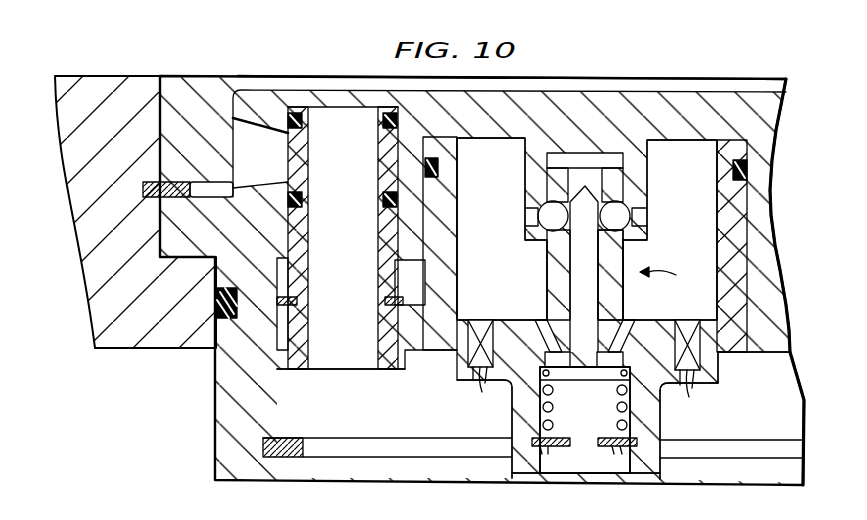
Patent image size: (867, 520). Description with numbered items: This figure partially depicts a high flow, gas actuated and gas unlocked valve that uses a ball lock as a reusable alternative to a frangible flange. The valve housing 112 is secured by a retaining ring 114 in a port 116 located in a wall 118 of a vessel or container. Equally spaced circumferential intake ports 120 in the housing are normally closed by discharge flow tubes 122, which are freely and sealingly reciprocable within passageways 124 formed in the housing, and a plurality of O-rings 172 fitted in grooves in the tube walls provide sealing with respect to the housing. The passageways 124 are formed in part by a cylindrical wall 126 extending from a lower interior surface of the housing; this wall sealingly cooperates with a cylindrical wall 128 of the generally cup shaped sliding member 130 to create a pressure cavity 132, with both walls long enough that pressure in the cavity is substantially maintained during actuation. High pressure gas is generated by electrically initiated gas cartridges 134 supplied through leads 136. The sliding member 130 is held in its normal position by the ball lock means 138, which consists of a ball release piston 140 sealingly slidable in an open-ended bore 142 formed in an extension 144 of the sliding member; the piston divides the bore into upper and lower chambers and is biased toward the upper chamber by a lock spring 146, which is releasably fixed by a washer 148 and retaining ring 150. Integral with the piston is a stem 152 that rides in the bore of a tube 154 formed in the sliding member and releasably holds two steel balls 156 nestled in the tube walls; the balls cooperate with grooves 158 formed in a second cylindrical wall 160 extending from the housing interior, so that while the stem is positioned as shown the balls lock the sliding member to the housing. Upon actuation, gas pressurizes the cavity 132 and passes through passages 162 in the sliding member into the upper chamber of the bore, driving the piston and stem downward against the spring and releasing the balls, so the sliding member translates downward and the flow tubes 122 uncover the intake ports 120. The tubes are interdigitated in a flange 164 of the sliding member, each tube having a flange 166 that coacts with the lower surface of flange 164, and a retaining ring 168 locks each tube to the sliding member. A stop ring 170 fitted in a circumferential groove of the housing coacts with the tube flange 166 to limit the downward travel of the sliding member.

The valve housing 112 is at (700, 92).
The retaining ring 114 is at (199, 182).
The port 116 is at (209, 88).
The wall 118 is at (80, 170).
The intake ports 120 is at (276, 170).
The discharge flow tubes 122 is at (306, 246).
The passageways 124 is at (285, 258).
The cylindrical wall 126 is at (440, 274).
The cylindrical wall 128 is at (458, 242).
The sliding member 130 is at (726, 383).
The pressure cavity 132 is at (711, 213).
The gas cartridges 134 is at (483, 332).
The leads 136 is at (480, 386).
The ball lock means 138 is at (679, 276).
The ball release piston 140 is at (568, 380).
The bore 142 is at (554, 422).
The extension 144 is at (661, 466).
The lock spring 146 is at (512, 462).
The washer 148 is at (595, 450).
The retaining ring 150 is at (618, 452).
The stem 152 is at (578, 262).
The tube 154 is at (633, 270).
The steel balls 156 is at (553, 216).
The grooves 158 is at (538, 228).
The second cylindrical wall 160 is at (648, 159).
The passages 162 is at (628, 324).
The flange 164 is at (411, 352).
The flange 166 is at (386, 369).
The retaining ring 168 is at (388, 299).
The stop ring 170 is at (287, 425).
The O-rings 172 is at (381, 196).